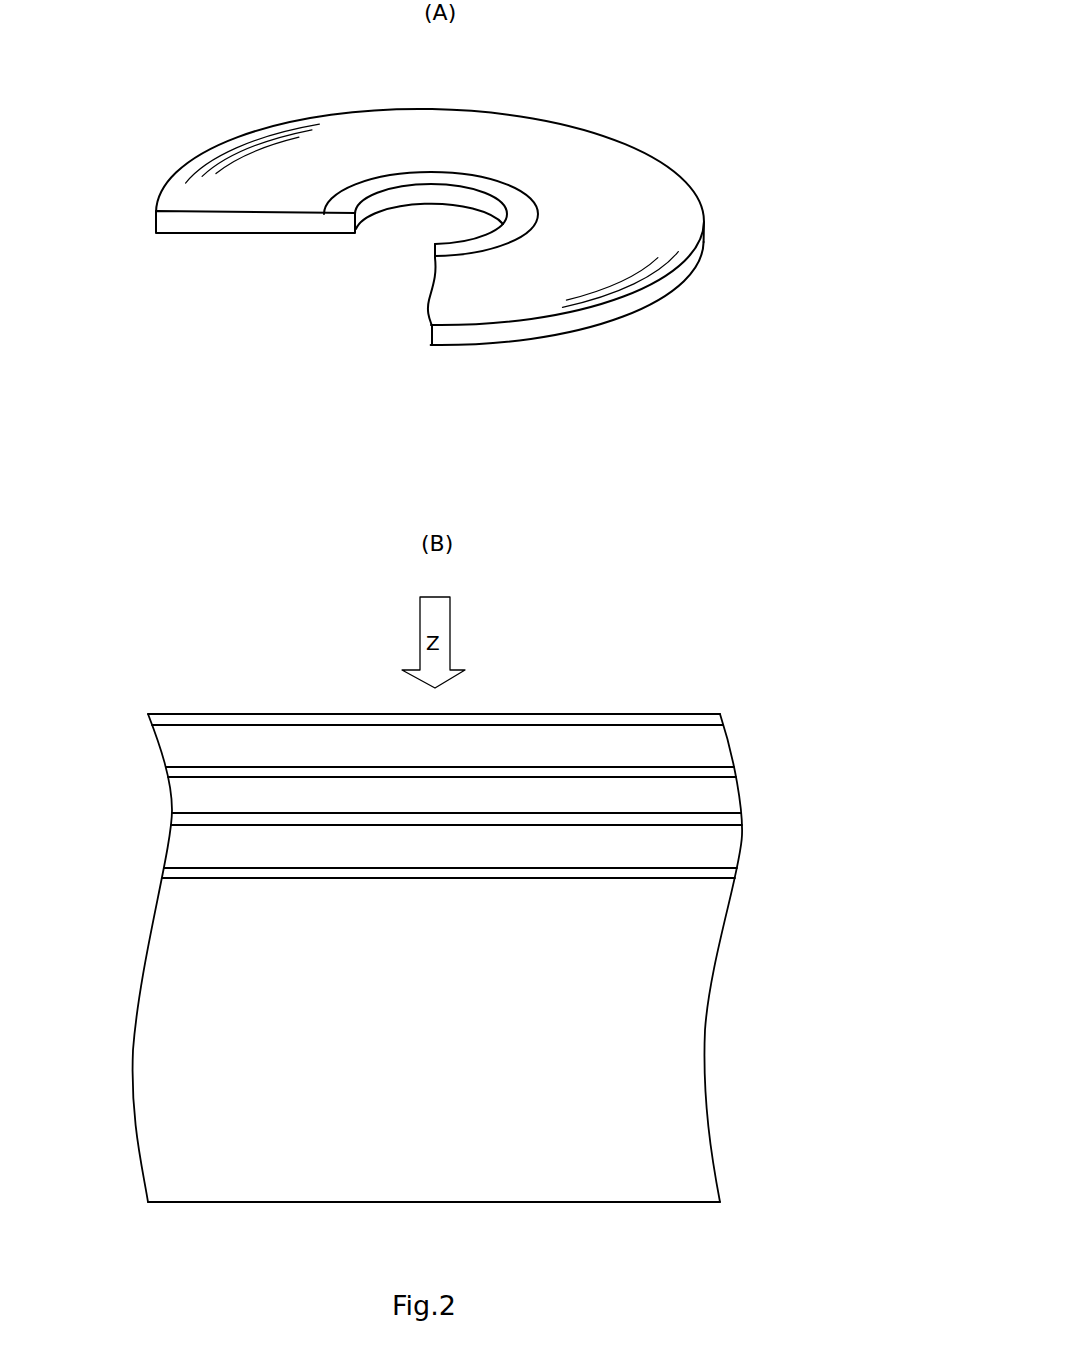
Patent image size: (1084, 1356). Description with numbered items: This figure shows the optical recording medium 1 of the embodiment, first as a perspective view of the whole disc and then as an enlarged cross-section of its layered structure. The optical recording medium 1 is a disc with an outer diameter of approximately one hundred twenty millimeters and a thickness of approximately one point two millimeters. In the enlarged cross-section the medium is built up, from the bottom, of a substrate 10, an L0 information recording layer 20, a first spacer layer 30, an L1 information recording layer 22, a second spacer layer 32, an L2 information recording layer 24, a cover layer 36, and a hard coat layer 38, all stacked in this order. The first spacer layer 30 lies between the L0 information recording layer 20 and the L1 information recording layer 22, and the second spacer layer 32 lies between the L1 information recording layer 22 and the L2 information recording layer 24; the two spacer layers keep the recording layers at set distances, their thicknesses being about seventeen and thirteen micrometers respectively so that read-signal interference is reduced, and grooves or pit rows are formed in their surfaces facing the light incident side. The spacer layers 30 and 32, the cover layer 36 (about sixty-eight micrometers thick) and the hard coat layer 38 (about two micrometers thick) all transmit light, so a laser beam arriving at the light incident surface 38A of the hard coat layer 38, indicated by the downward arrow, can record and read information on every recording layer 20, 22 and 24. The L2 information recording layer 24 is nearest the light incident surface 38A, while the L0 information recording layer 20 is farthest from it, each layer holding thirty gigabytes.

The optical recording medium 1 is at (667, 132).
The substrate 10 is at (684, 1084).
The L0 information recording layer 20 is at (727, 875).
The first spacer layer 30 is at (725, 850).
The L1 information recording layer 22 is at (730, 823).
The second spacer layer 32 is at (727, 800).
The L2 information recording layer 24 is at (733, 773).
The cover layer 36 is at (722, 748).
The hard coat layer 38 is at (722, 715).
The light incident surface 38A is at (538, 714).